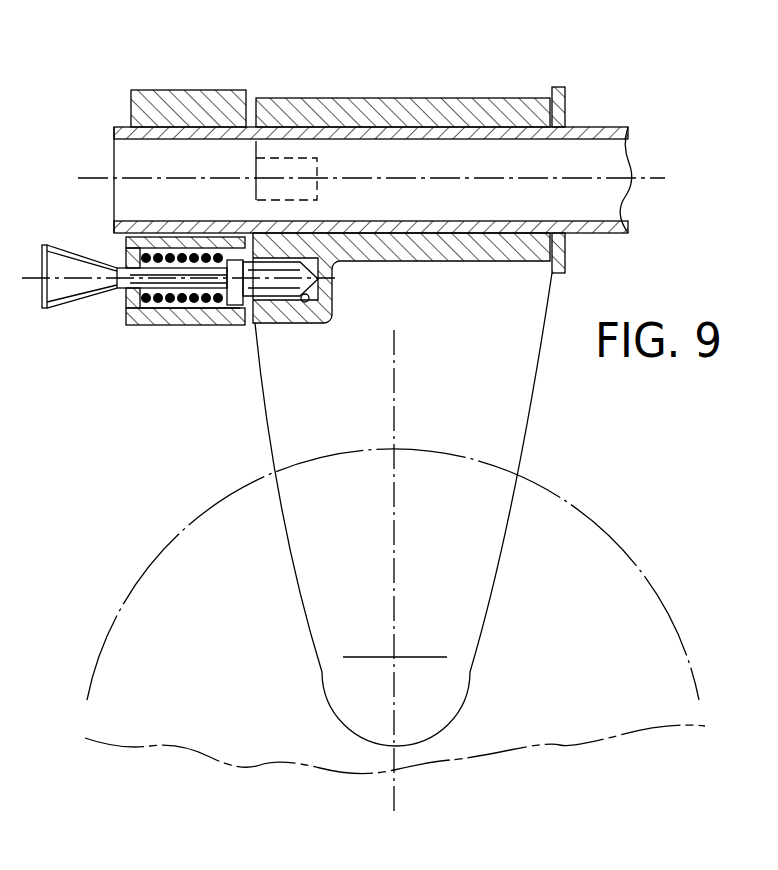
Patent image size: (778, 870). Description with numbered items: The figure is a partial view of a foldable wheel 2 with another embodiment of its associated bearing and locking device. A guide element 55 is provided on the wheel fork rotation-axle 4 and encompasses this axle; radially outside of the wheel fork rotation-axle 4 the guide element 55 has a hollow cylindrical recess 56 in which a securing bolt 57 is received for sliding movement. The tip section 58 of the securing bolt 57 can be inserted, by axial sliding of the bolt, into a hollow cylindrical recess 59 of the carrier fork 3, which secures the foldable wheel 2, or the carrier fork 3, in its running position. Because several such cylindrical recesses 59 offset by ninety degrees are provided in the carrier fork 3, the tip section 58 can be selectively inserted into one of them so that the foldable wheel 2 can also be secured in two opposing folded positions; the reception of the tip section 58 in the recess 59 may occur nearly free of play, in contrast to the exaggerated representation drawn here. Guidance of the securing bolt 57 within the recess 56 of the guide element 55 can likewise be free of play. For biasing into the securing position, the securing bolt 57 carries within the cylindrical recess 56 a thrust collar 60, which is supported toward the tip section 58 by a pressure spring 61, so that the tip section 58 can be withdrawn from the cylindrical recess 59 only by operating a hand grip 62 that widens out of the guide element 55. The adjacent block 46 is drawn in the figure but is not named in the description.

The foldable wheel 2 is at (673, 503).
The carrier fork 3 is at (500, 550).
The wheel fork rotation-axle 4 is at (601, 123).
The support block 46 is at (461, 150).
The guide element 55 is at (177, 90).
The hollow cylindrical recess 56 is at (185, 303).
The securing bolt 57 is at (130, 284).
The tip section 58 is at (270, 290).
The hollow cylindrical recess 59 is at (279, 158).
The thrust collar 60 is at (235, 300).
The pressure spring 61 is at (155, 308).
The hand grip 62 is at (68, 253).